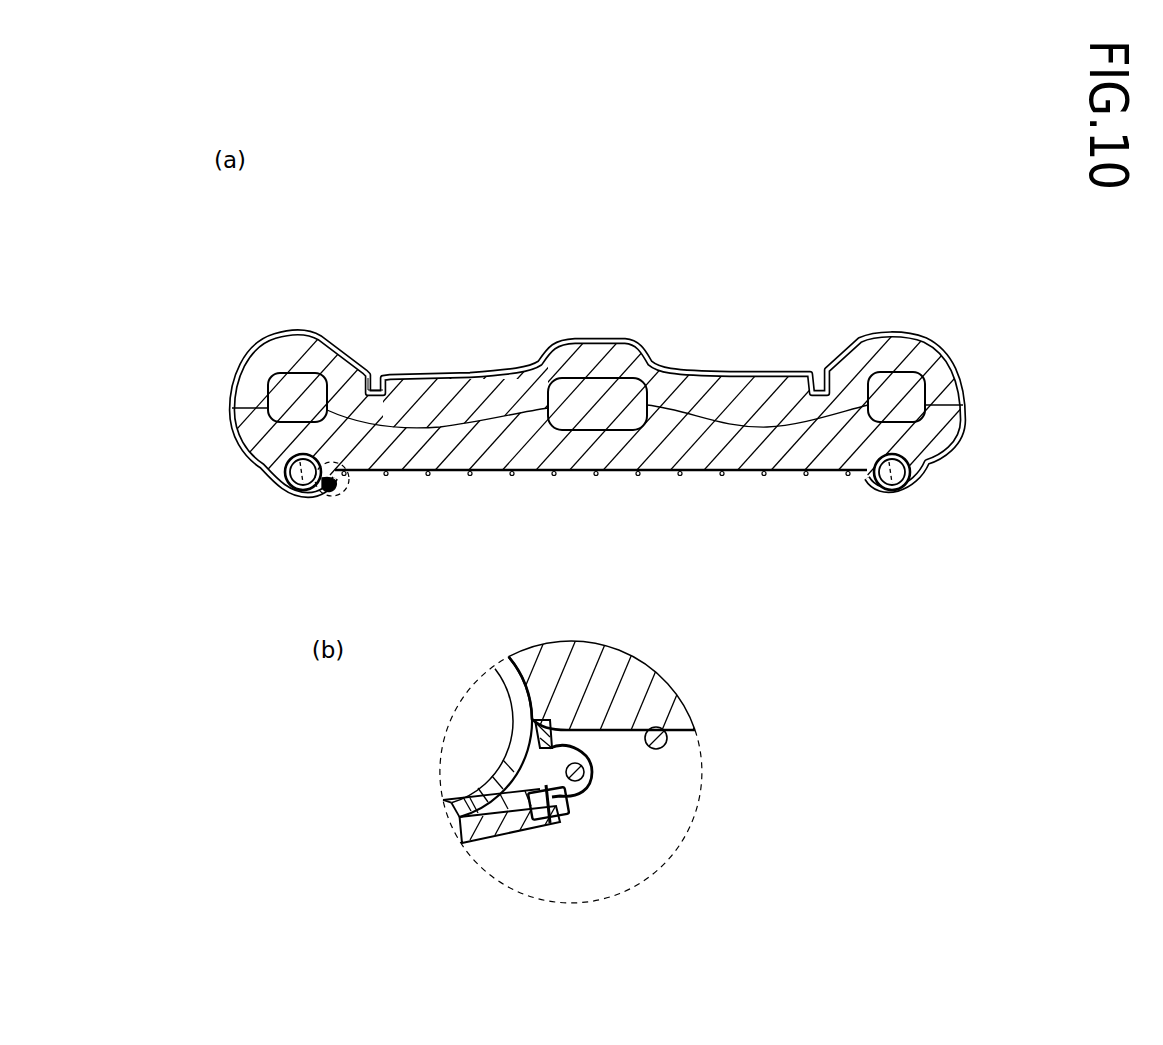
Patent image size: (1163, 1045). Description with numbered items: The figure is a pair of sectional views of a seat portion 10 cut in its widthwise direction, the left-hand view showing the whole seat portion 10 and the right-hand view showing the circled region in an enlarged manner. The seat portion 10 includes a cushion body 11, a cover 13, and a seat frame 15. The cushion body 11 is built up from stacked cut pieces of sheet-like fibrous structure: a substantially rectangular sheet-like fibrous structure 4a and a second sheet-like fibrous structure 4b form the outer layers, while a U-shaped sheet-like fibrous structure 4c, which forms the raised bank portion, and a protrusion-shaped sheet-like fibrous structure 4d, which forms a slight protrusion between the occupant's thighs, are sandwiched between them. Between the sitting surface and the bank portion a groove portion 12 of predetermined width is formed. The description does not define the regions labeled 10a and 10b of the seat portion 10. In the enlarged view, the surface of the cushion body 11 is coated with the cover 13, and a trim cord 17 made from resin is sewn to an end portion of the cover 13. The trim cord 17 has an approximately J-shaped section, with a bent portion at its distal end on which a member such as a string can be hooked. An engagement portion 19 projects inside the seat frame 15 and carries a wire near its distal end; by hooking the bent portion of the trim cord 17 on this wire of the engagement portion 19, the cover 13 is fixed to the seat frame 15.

The seat portion 10 is at (276, 217).
The upper surface 10a is at (428, 370).
The lower surface 10b is at (410, 475).
The cushion body 11 is at (398, 372).
The groove portion 12 is at (352, 372).
The cover 13 is at (305, 330).
The seat frame 15 is at (290, 476).
The trim cord 17 is at (330, 490).
The engagement portion 19 is at (340, 483).
The sheet-like fibrous structure 4a is at (695, 388).
The sheet-like fibrous structure 4b is at (745, 450).
The U-shaped sheet-like fibrous structure 4c is at (263, 452).
The protrusion-shaped sheet-like fibrous structure 4d is at (590, 412).